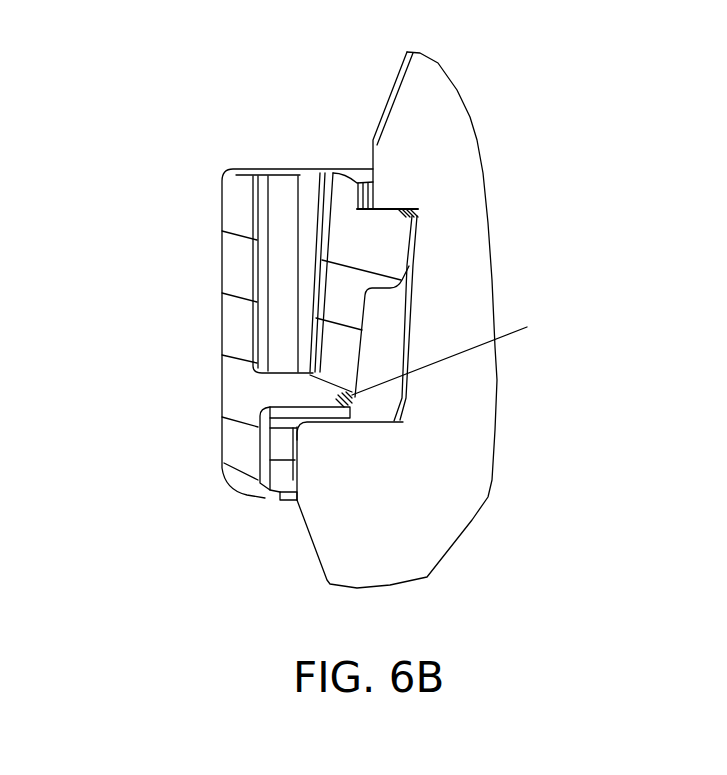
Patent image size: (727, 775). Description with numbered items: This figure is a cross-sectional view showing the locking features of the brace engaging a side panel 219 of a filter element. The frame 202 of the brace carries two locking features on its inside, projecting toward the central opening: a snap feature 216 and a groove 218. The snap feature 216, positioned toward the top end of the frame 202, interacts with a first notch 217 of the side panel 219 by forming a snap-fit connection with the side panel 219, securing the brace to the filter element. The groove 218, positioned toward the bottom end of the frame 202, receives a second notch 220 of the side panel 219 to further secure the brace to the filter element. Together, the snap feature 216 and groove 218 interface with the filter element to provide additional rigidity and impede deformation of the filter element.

The frame 202 is at (233, 318).
The snap feature 216 is at (348, 215).
The first notch 217 is at (417, 213).
The groove 218 is at (277, 473).
The side panel 219 is at (450, 468).
The second notch 220 is at (360, 419).